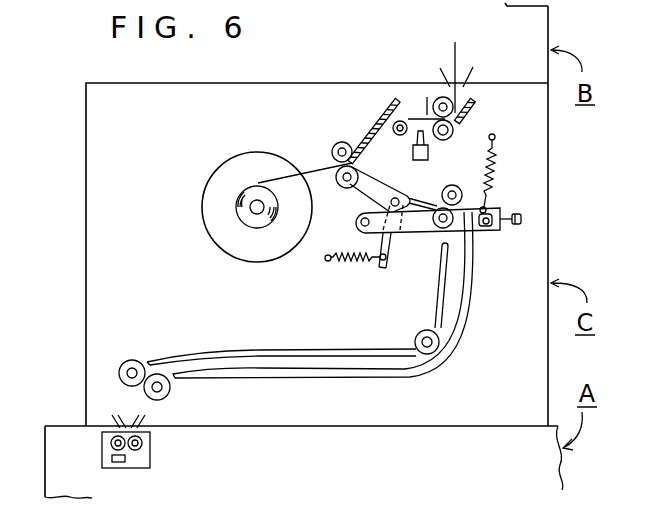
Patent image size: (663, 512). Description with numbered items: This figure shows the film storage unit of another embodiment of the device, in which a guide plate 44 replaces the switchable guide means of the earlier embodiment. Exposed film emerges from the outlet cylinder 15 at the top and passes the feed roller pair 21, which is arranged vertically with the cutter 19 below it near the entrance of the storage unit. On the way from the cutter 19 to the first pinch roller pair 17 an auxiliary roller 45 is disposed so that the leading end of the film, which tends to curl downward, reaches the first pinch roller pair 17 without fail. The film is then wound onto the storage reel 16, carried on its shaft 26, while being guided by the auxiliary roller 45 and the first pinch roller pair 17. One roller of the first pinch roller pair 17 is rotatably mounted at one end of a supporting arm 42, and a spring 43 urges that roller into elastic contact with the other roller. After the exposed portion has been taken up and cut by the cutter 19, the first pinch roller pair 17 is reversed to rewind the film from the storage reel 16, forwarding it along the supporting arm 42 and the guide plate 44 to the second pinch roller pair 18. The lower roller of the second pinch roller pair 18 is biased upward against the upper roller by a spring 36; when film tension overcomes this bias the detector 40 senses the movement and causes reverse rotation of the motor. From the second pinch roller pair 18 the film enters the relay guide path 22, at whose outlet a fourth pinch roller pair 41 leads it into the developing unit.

The outlet cylinder 15 is at (470, 73).
The storage reel 16 is at (231, 171).
The first pinch roller pair 17 is at (325, 160).
The second pinch roller pair 18 is at (447, 179).
The cutter 19 is at (422, 104).
The feed roller pair 21 is at (458, 130).
The relay guide path 22 is at (467, 314).
The shaft of the storage reel 26 is at (250, 205).
The spring 36 is at (493, 157).
The detector 40 is at (521, 219).
The fourth pinch roller pair 41 is at (145, 352).
The supporting arm 42 is at (370, 190).
The spring 43 is at (350, 262).
The guide plate 44 is at (410, 207).
The auxiliary roller 45 is at (392, 112).